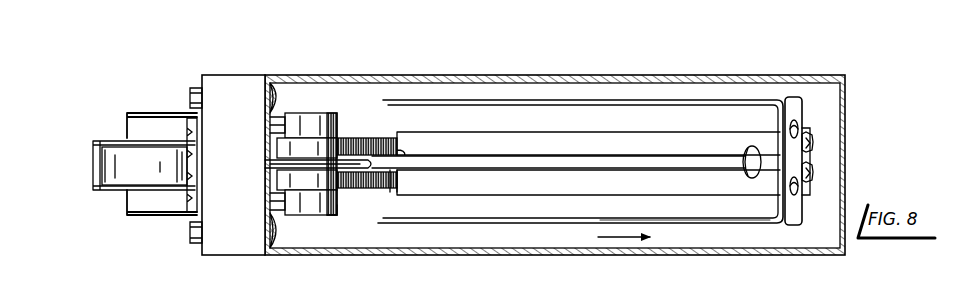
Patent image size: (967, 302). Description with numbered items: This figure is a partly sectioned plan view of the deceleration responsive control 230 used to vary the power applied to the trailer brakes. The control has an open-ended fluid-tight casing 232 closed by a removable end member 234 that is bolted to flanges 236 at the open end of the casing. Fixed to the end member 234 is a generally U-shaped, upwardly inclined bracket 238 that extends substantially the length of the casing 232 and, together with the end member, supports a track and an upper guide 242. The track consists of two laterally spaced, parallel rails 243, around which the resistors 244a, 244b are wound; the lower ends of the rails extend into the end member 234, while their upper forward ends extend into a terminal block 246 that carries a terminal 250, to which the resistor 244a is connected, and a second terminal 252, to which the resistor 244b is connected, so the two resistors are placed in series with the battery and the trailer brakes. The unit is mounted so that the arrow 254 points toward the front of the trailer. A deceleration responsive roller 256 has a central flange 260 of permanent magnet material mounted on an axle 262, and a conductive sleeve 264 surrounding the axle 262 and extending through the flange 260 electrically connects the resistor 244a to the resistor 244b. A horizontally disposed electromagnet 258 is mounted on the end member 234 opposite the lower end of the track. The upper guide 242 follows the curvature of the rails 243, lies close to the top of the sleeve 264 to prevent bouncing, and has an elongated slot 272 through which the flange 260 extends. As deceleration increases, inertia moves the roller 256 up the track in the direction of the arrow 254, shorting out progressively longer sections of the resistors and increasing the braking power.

The deceleration responsive control 230 is at (183, 83).
The casing 232 is at (355, 255).
The end member 234 is at (235, 77).
The flanges 236 is at (275, 109).
The bracket 238 is at (465, 98).
The upper guide 242 is at (643, 187).
The rails 243 is at (365, 131).
The resistor 244a is at (395, 190).
The resistor 244b is at (388, 137).
The terminal block 246 is at (804, 193).
The terminal 250 is at (812, 175).
The terminal 252 is at (813, 145).
The arrow 254 is at (622, 238).
The roller 256 is at (340, 215).
The electromagnet 258 is at (105, 165).
The central flange 260 is at (393, 176).
The axle 262 is at (331, 112).
The conductive sleeve 264 is at (270, 180).
The elongated slot 272 is at (510, 157).